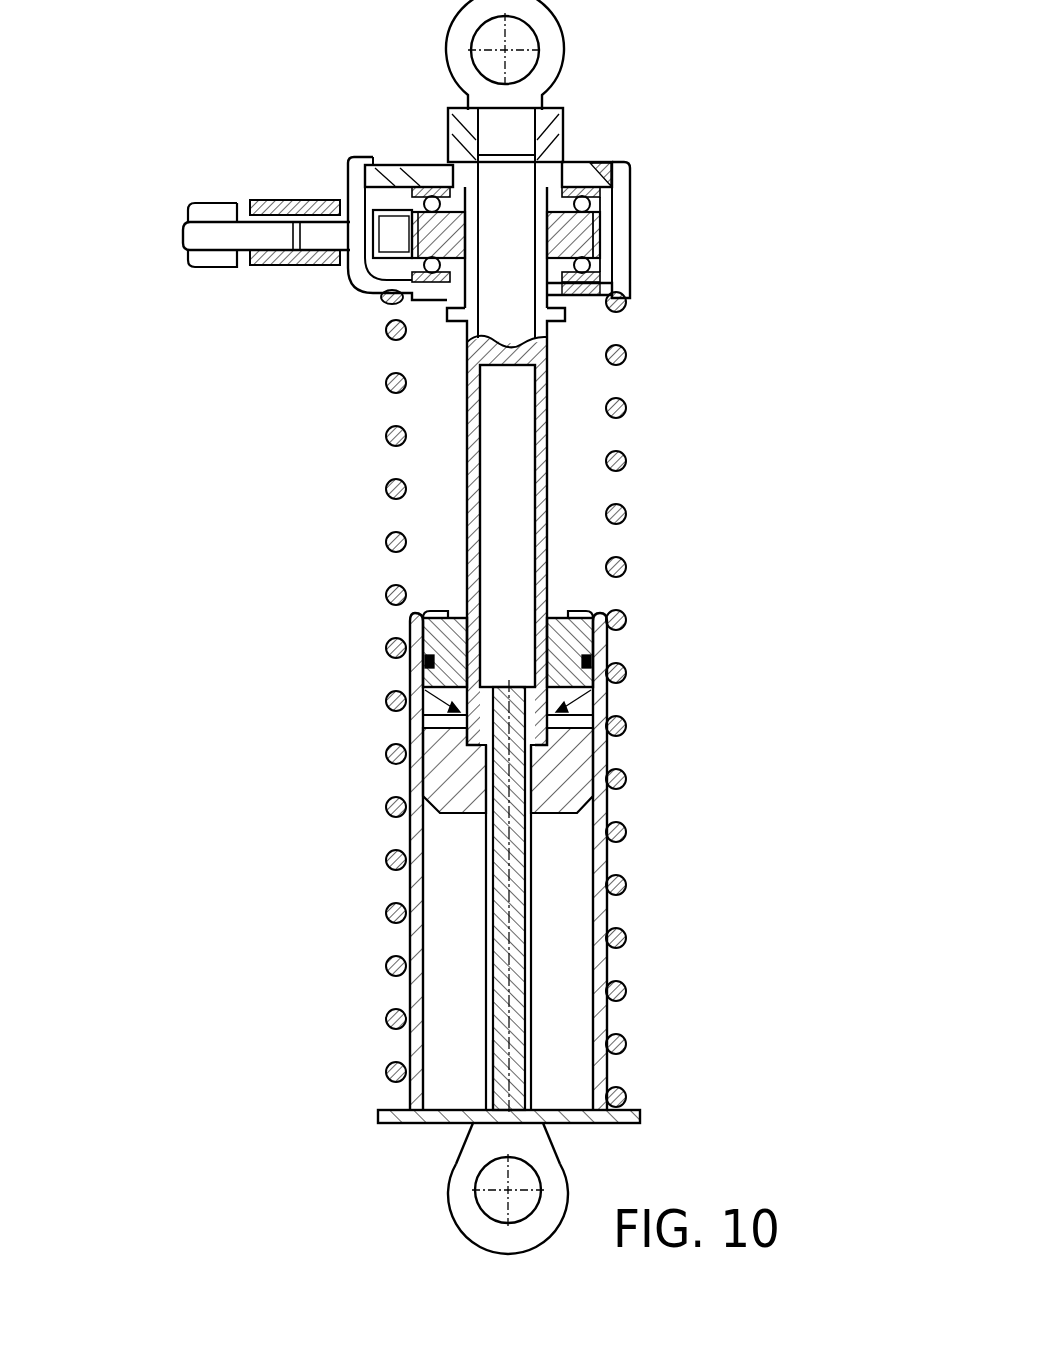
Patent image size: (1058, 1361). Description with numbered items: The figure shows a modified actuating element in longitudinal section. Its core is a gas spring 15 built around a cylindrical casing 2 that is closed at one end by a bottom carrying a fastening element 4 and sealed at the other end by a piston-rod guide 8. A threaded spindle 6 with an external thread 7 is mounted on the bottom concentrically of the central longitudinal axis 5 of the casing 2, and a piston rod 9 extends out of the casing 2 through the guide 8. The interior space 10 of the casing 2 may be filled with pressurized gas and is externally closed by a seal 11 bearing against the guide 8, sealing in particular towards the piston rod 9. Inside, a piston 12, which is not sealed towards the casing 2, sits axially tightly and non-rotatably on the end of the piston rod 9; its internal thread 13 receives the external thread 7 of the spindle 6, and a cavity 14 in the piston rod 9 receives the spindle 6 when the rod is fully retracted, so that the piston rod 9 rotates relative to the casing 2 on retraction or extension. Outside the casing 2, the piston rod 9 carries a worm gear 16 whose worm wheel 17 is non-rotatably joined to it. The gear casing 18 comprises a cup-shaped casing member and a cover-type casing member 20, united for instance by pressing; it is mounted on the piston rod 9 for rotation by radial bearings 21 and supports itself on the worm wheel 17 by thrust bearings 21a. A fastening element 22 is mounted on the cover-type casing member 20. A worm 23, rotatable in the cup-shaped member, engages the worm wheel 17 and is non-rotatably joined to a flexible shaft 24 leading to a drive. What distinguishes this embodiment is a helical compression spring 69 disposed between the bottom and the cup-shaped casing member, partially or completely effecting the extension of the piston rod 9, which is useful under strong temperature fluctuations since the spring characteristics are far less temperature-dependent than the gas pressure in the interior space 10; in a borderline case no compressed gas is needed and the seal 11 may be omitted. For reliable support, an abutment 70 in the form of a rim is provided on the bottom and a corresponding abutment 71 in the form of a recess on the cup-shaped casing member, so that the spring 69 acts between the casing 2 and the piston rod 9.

The cylindrical casing 2 is at (598, 917).
The fastening element 4 is at (467, 1205).
The central longitudinal axis 5 is at (507, 980).
The threaded spindle 6 is at (500, 1035).
The external thread 7 is at (493, 1077).
The piston-rod guide 8 is at (445, 645).
The piston rod 9 is at (542, 528).
The interior space 10 is at (560, 1010).
The seal 11 is at (580, 708).
The piston 12 is at (560, 771).
The internal thread 13 is at (480, 778).
The cavity 14 is at (507, 475).
The gas spring 15 is at (606, 852).
The worm gear 16 is at (645, 201).
The worm wheel 17 is at (568, 240).
The gear casing 18 is at (636, 256).
The cover-type casing member 20 is at (395, 172).
The radial bearings 21 is at (565, 165).
The thrust bearings 21a is at (592, 185).
The fastening element 22 is at (548, 42).
The worm 23 is at (346, 213).
The flexible shaft 24 is at (200, 206).
The helical compression spring 69 is at (628, 614).
The abutment 70 is at (640, 1116).
The abutment 71 is at (370, 293).